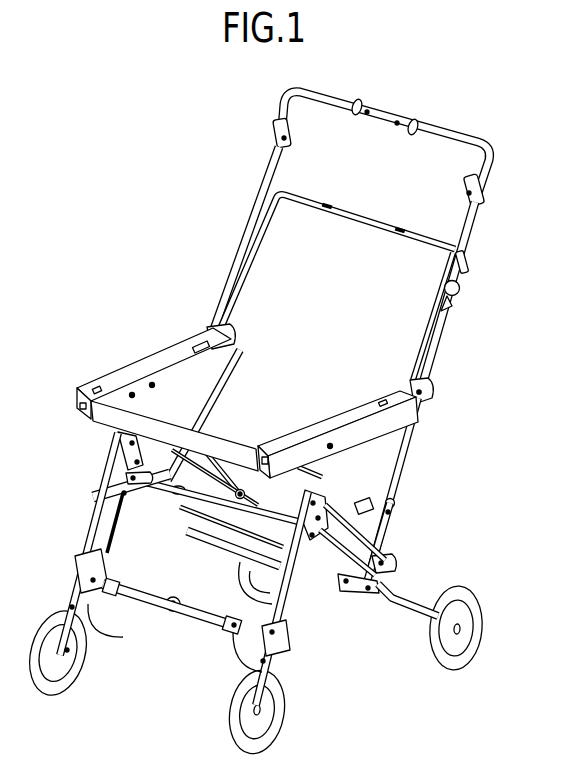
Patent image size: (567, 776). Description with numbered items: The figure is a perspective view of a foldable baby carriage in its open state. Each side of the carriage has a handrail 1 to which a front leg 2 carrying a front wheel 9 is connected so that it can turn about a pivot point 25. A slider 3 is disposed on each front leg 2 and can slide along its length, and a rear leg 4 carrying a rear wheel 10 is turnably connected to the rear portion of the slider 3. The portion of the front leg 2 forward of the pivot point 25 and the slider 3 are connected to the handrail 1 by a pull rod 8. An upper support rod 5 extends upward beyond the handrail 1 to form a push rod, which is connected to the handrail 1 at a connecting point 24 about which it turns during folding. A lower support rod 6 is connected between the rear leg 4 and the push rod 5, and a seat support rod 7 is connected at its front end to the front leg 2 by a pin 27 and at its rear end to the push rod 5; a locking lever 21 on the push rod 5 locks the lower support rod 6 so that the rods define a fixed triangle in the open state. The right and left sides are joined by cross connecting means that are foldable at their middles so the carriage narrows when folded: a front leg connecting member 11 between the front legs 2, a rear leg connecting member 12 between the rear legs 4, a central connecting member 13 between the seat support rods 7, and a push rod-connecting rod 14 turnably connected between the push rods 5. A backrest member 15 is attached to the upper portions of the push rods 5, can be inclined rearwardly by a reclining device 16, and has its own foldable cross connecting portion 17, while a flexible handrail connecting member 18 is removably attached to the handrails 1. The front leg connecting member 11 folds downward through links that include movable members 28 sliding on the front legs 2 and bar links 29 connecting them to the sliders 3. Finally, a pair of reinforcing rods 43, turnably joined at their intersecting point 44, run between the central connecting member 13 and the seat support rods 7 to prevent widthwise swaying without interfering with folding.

The handrail 1 is at (140, 366).
The front leg 2 is at (100, 527).
The slider 3 is at (315, 505).
The rear leg 4 is at (405, 603).
The upper support rod 5 is at (220, 378).
The lower support rod 6 is at (385, 523).
The seat support rod 7 is at (360, 503).
The pull rod 8 is at (313, 472).
The front wheel 9 is at (72, 660).
The rear wheel 10 is at (480, 617).
The front leg connecting member 11 is at (205, 622).
The rear leg connecting member 12 is at (354, 590).
The central connecting member 13 is at (160, 495).
The push rod-connecting rod 14 is at (430, 130).
The backrest member 15 is at (447, 332).
The reclining device 16 is at (460, 287).
The cross connecting portion 17 is at (357, 214).
The handrail connecting member 18 is at (198, 443).
The locking lever 21 is at (387, 562).
The connecting point 24 is at (424, 398).
The pivot point 25 is at (154, 388).
The pin 27 is at (127, 497).
The movable member 28 is at (85, 568).
The bar link 29 is at (113, 540).
The reinforcing rod 43 is at (236, 492).
The intersecting point 44 is at (241, 492).